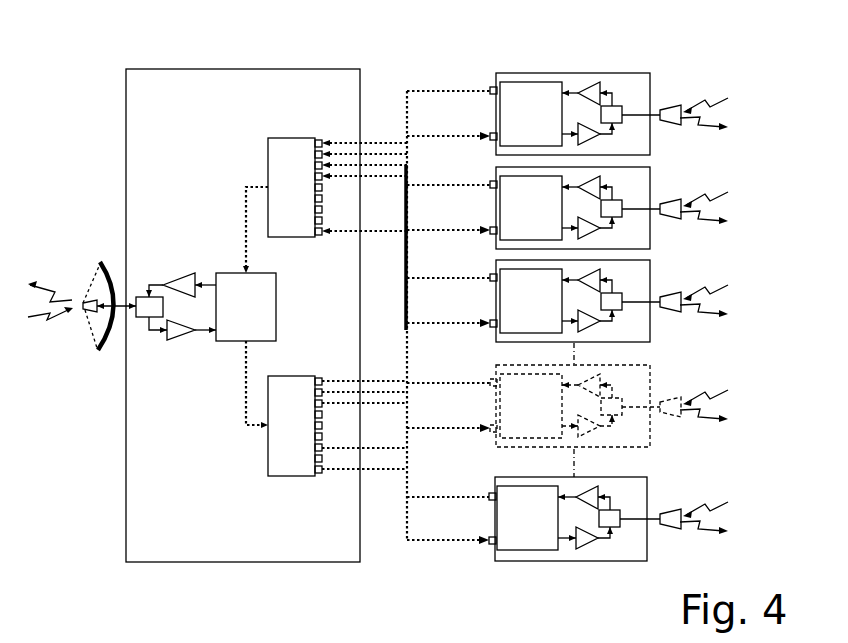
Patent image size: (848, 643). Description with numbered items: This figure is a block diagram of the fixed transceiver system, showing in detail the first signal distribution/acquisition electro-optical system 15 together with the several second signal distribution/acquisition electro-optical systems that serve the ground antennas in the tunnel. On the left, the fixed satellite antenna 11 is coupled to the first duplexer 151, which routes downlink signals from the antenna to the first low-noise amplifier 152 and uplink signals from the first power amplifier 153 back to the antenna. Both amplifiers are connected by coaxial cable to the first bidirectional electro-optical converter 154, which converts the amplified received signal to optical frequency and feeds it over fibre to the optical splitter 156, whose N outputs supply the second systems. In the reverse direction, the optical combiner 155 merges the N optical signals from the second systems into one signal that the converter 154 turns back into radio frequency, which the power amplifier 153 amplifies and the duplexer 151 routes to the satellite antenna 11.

The fixed satellite antenna 11 is at (97, 262).
The first signal distribution/acquisition electro-optical system 15 is at (143, 107).
The first duplexer 151 is at (142, 312).
The first low-noise amplifier 152 is at (172, 327).
The first power amplifier 153 is at (178, 275).
The first bidirectional electro-optical converter 154 is at (240, 325).
The optical combiner 155 is at (277, 158).
The optical splitter 156 is at (295, 447).